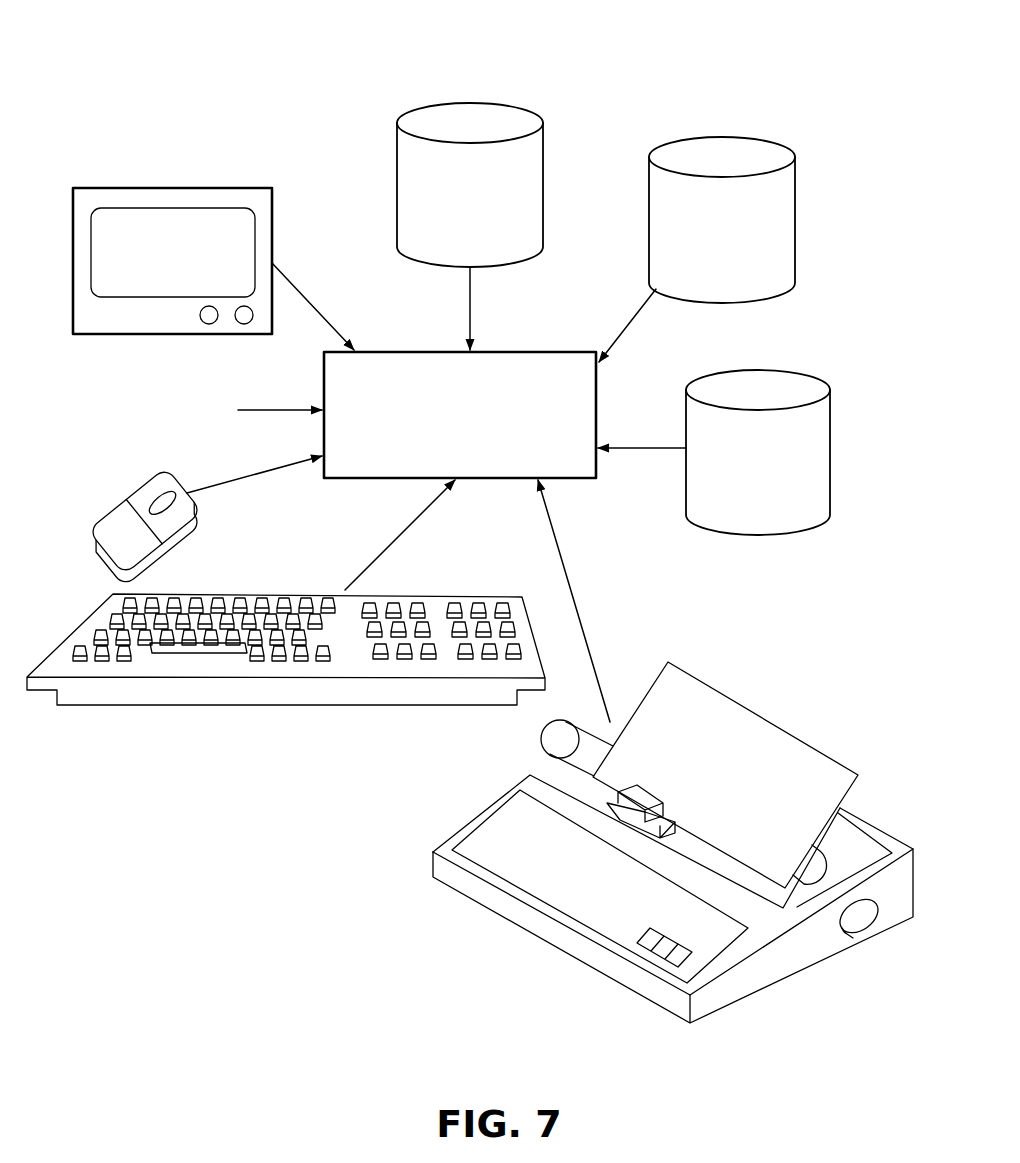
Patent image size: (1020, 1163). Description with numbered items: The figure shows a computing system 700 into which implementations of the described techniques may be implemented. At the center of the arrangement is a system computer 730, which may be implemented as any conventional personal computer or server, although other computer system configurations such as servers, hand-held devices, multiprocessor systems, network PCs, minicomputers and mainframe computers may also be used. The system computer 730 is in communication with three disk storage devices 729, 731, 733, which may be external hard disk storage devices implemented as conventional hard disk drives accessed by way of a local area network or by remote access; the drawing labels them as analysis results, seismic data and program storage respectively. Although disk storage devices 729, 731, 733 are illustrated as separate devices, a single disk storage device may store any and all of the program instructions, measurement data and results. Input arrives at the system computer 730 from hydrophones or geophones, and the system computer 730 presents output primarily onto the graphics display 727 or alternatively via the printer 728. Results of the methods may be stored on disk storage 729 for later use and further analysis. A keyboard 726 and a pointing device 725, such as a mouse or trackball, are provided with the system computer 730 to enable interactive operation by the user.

The computing system 700 is at (200, 70).
The pointing device 725 is at (120, 503).
The keyboard 726 is at (313, 705).
The graphics display 727 is at (198, 186).
The printer 728 is at (587, 968).
The disk storage device 729 is at (732, 370).
The system computer 730 is at (498, 352).
The disk storage device 731 is at (733, 132).
The disk storage device 733 is at (440, 102).